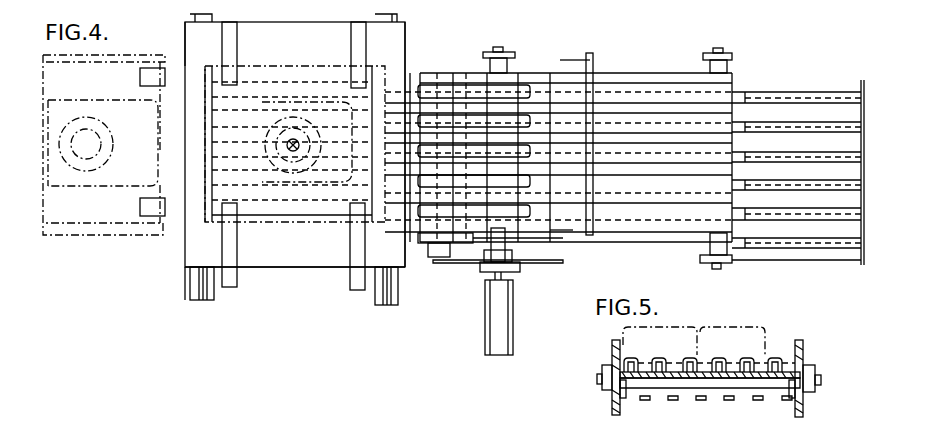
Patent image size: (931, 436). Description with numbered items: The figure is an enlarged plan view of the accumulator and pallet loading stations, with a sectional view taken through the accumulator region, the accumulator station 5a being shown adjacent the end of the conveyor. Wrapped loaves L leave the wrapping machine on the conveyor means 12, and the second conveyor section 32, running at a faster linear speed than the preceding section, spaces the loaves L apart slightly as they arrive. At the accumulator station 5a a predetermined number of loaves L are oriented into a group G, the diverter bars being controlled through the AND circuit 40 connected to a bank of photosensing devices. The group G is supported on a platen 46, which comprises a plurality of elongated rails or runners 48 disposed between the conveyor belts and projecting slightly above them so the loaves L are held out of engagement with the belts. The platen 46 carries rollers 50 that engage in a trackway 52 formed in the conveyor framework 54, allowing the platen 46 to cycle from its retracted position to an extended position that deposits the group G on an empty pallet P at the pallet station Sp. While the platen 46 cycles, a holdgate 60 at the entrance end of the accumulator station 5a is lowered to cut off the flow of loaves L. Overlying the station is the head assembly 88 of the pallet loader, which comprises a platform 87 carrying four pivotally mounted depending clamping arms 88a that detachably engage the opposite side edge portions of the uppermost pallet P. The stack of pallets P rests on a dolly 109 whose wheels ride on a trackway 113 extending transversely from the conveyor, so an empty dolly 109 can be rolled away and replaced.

In FIG. 4, the conveyor means 12 is at (804, 95).
In FIG. 4, the second conveyor section 32 is at (471, 118).
In FIG. 5, the second conveyor section 32 is at (767, 345).
In FIG. 4, the AND circuit 40 is at (407, 98).
In FIG. 4, the platen 46 is at (207, 150).
In FIG. 5, the platen 46 is at (768, 358).
In FIG. 4, the rails or runners 48 is at (414, 194).
In FIG. 5, the rails or runners 48 is at (686, 362).
In FIG. 4, the rollers 50 is at (510, 62).
In FIG. 5, the rollers 50 is at (602, 380).
In FIG. 5, the trackway 52 is at (612, 398).
In FIG. 5, the conveyor framework 54 is at (612, 406).
In FIG. 4, the holdgate 60 is at (596, 58).
In FIG. 4, the platform 87 is at (43, 218).
In FIG. 4, the head assembly 88 is at (82, 100).
In FIG. 4, the clamping arms 88a is at (163, 64).
In FIG. 4, the dolly 109 is at (185, 265).
In FIG. 4, the trackway 113 is at (190, 290).
In FIG. 4, the rail 5a is at (553, 62).
In FIG. 4, the pallet P is at (207, 74).
In FIG. 4, the pallet station Sp is at (292, 268).
In FIG. 4, the group G is at (412, 238).
In FIG. 4, the loaves L is at (545, 228).
In FIG. 5, the loaves L is at (623, 340).